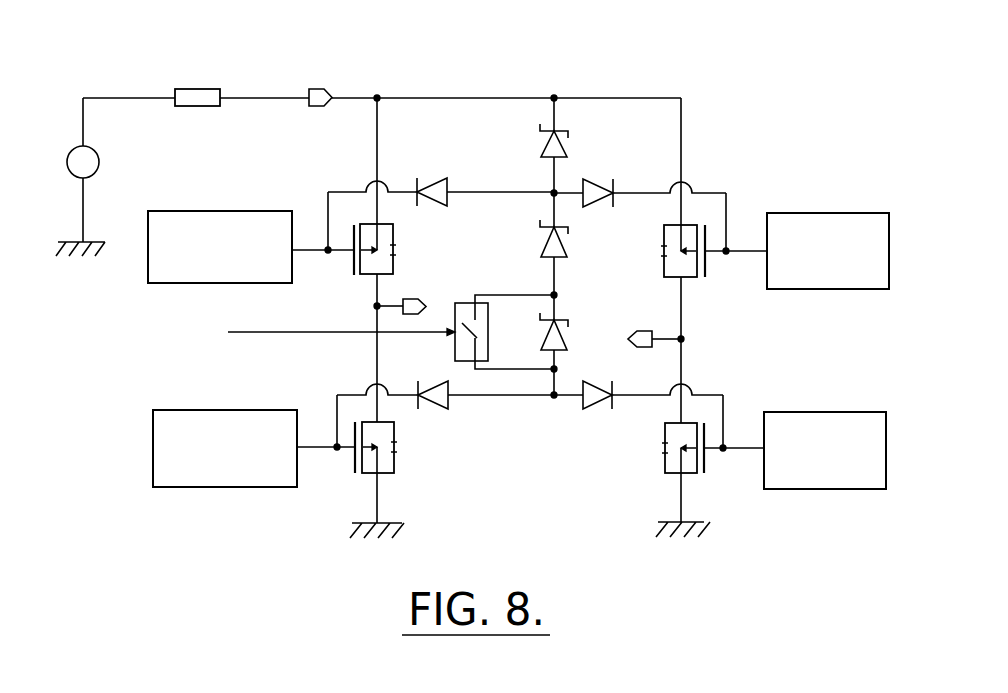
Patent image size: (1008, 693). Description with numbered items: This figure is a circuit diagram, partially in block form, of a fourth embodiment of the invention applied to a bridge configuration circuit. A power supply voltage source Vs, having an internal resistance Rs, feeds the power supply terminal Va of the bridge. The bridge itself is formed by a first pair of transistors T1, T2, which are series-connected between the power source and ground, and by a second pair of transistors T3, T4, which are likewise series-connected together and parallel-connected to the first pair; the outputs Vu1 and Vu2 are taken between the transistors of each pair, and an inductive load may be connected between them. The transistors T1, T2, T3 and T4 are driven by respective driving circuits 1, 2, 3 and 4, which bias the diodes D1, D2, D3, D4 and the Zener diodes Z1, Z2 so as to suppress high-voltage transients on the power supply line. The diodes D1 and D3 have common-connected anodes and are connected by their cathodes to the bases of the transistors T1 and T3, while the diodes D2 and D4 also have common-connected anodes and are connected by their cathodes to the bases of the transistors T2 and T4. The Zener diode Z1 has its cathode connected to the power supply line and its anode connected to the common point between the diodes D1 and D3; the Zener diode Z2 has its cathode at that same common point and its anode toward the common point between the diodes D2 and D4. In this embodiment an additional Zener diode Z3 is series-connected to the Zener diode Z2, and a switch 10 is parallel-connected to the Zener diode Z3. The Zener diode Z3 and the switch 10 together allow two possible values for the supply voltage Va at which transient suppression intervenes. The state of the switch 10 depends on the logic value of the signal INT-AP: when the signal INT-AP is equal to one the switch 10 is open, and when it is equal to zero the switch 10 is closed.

The driving circuit 1 is at (148, 245).
The driving circuit 2 is at (152, 443).
The driving circuit 3 is at (889, 247).
The driving circuit 4 is at (886, 445).
The switch 10 is at (488, 360).
The transistor T1 is at (392, 249).
The transistor T2 is at (393, 447).
The transistor T3 is at (667, 251).
The transistor T4 is at (664, 448).
The diode D1 is at (441, 199).
The diode D2 is at (445, 398).
The diode D3 is at (640, 200).
The diode D4 is at (638, 399).
The Zener diode Z1 is at (535, 140).
The Zener diode Z2 is at (535, 238).
The additional Zener diode Z3 is at (566, 320).
The internal resistance Rs is at (196, 78).
The power supply voltage source Vs is at (86, 177).
The power supply terminal Va is at (494, 78).
The output Vu1 is at (408, 291).
The output Vu2 is at (656, 323).
The signal INT-AP is at (341, 321).